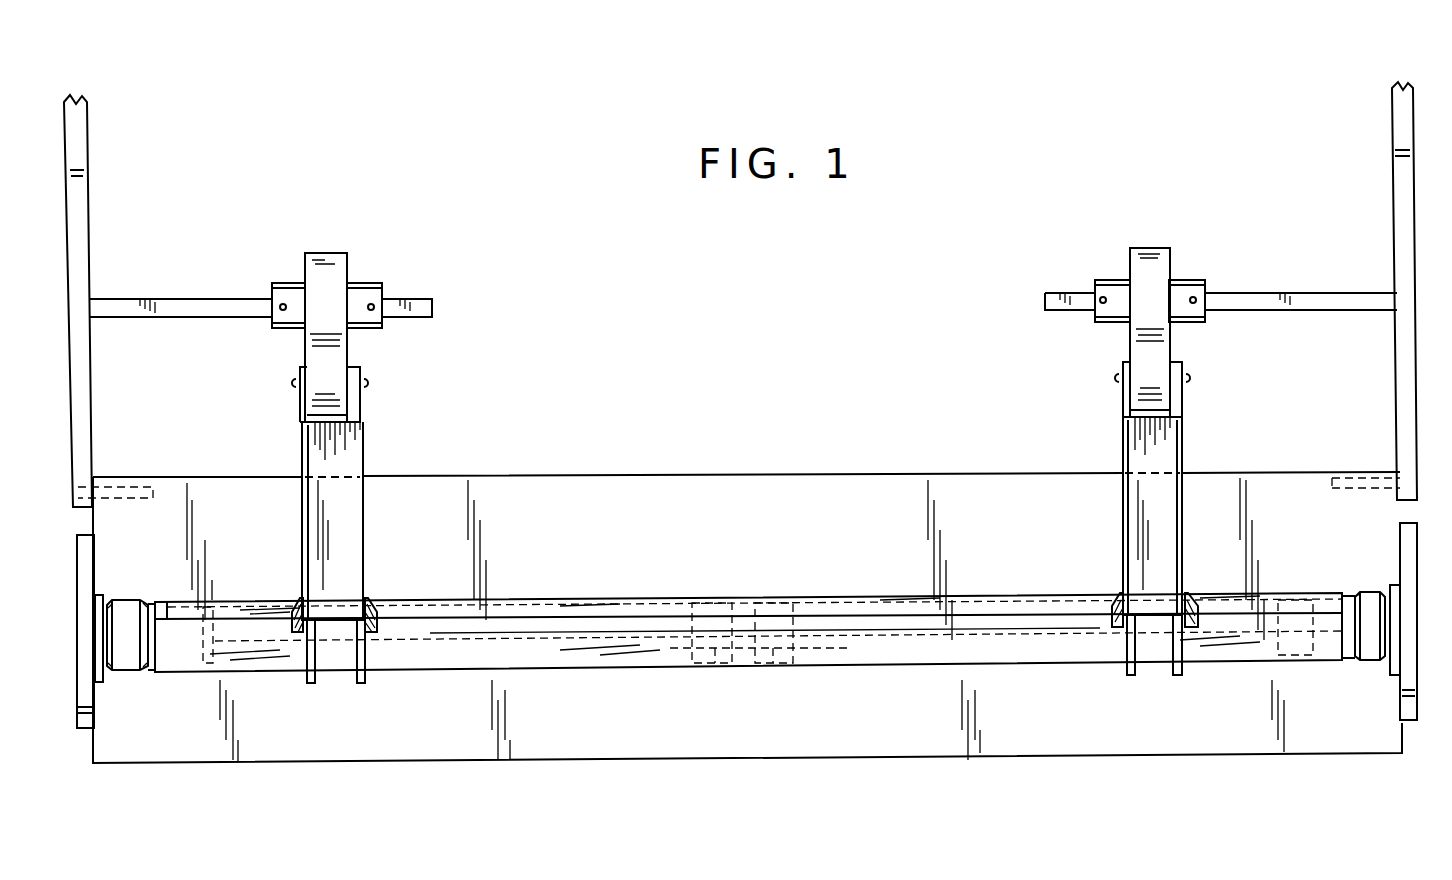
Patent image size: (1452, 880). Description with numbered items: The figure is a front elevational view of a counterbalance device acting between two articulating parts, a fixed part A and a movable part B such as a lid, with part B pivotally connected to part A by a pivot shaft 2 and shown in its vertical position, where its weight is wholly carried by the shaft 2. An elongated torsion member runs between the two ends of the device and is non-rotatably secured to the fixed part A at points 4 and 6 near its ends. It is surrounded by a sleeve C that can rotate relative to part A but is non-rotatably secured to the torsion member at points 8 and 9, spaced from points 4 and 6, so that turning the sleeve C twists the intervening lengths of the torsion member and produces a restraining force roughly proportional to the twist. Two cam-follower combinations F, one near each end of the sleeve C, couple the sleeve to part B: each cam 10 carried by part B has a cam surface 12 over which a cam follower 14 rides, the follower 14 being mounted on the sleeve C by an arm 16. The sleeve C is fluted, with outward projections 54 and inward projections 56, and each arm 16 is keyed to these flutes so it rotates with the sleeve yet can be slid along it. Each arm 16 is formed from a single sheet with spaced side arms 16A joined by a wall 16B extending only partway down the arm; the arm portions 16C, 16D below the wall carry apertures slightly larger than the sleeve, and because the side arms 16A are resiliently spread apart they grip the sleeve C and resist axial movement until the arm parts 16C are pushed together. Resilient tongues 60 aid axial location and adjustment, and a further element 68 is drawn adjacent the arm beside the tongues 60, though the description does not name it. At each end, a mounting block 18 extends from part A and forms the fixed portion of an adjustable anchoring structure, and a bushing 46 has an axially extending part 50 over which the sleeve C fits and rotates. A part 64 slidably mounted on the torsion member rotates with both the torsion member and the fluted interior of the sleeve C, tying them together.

The fixed part A is at (346, 776).
The movable part B is at (1380, 187).
The sleeve C is at (885, 595).
The cam-follower combination F is at (380, 354).
The pivot axis or shaft 2 is at (128, 497).
The securing point 4 is at (1303, 600).
The securing point 6 is at (167, 617).
The securing point 8 is at (780, 603).
The securing point 9 is at (712, 603).
The cam 10 is at (350, 271).
The cam surface 12 is at (318, 332).
The cam follower 14 is at (340, 385).
The arm 16 is at (350, 452).
The side arms 16A is at (289, 522).
The wall 16B is at (352, 536).
The arm portion 16C is at (311, 683).
The arm portion 16D is at (361, 683).
The mounting block 18 is at (88, 718).
The bushing 46 is at (125, 612).
The axially extending part 50 is at (190, 660).
The outward projections 54 is at (545, 617).
The inward projections 56 is at (548, 623).
The resilient tongues 60 is at (298, 600).
The part 64 is at (715, 650).
The wedge 68 is at (372, 600).